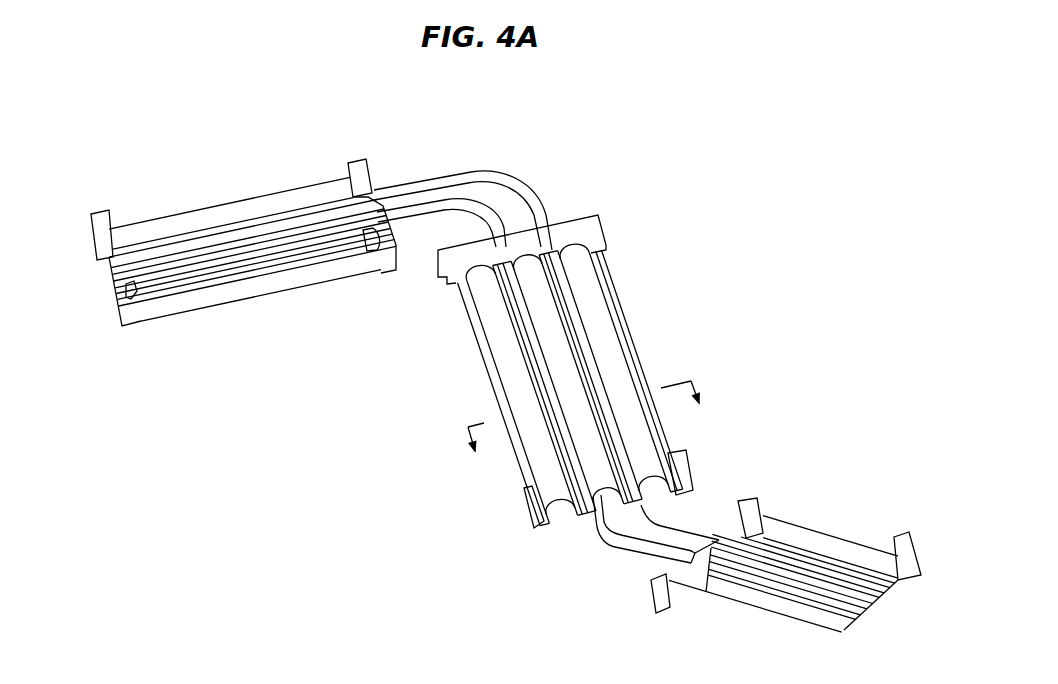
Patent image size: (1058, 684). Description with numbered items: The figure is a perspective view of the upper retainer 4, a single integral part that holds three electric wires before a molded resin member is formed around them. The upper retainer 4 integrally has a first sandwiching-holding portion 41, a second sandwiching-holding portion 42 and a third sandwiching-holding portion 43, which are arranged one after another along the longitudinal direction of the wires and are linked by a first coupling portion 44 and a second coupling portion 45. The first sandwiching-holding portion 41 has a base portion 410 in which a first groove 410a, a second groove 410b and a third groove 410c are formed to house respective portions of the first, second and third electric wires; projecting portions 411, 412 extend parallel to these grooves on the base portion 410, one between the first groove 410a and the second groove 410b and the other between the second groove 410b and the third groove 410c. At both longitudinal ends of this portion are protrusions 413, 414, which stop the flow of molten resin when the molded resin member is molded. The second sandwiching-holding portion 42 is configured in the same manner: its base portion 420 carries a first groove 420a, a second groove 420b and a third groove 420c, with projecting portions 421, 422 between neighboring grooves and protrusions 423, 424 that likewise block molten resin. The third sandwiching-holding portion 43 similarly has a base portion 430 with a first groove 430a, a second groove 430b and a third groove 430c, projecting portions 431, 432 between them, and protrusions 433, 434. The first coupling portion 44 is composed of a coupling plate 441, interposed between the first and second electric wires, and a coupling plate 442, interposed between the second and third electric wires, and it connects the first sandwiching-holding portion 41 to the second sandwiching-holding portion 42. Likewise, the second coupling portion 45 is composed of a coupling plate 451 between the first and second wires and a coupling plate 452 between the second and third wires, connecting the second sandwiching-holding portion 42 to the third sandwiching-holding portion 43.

The upper retainer 4 is at (501, 398).
The first sandwiching-holding portion 41 is at (226, 243).
The base portion 410 is at (281, 198).
The first groove 410a is at (168, 253).
The second groove 410b is at (210, 268).
The third groove 410c is at (263, 284).
The projecting portion 411 is at (349, 272).
The projecting portion 412 is at (290, 271).
The protrusion 413 is at (101, 216).
The protrusion 414 is at (356, 162).
The second sandwiching-holding portion 42 is at (582, 366).
The base portion 420 is at (637, 340).
The first groove 420a is at (572, 289).
The second groove 420b is at (540, 322).
The third groove 420c is at (490, 337).
The projecting portion 421 is at (612, 424).
The projecting portion 422 is at (557, 437).
The protrusion 423 is at (594, 229).
The protrusion 424 is at (533, 512).
The third sandwiching-holding portion 43 is at (776, 573).
The base portion 430 is at (817, 538).
The first groove 430a is at (773, 550).
The second groove 430b is at (750, 583).
The third groove 430c is at (722, 600).
The projecting portion 431 is at (873, 597).
The projecting portion 432 is at (851, 615).
The protrusion 433 is at (657, 587).
The protrusion 434 is at (905, 545).
The first coupling portion 44 is at (499, 186).
The coupling plate 441 is at (519, 176).
The coupling plate 442 is at (460, 205).
The second coupling portion 45 is at (640, 541).
The coupling plate 451 is at (680, 528).
The coupling plate 452 is at (595, 528).